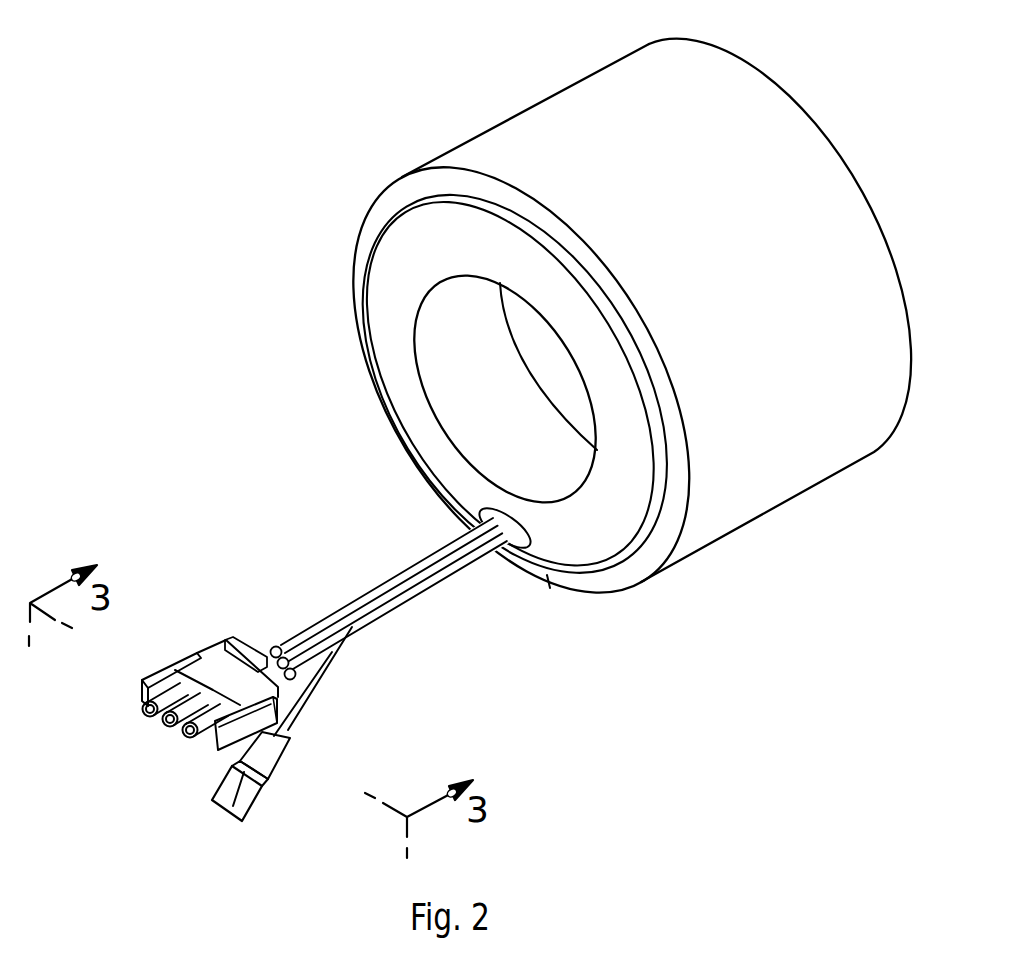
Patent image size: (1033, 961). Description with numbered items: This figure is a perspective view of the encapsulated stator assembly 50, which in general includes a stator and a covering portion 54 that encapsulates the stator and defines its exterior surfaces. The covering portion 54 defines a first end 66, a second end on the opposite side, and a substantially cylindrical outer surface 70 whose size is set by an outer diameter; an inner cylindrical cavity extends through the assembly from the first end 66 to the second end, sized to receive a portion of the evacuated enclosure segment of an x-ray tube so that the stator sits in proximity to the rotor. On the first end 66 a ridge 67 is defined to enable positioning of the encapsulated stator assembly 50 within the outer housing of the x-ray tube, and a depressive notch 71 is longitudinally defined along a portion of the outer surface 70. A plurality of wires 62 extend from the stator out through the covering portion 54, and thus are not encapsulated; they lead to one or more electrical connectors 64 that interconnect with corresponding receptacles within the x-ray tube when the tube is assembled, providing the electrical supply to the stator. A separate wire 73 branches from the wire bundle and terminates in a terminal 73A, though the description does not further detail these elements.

The encapsulated stator assembly 50 is at (469, 88).
The covering portion 54 is at (825, 428).
The wires 62 is at (390, 577).
The electrical connectors 64 is at (216, 676).
The first end 66 is at (388, 323).
The ridge 67 is at (397, 204).
The outer surface 70 is at (656, 310).
The depressive notch 71 is at (548, 581).
The wire 73 is at (313, 683).
The terminal 73A is at (273, 760).